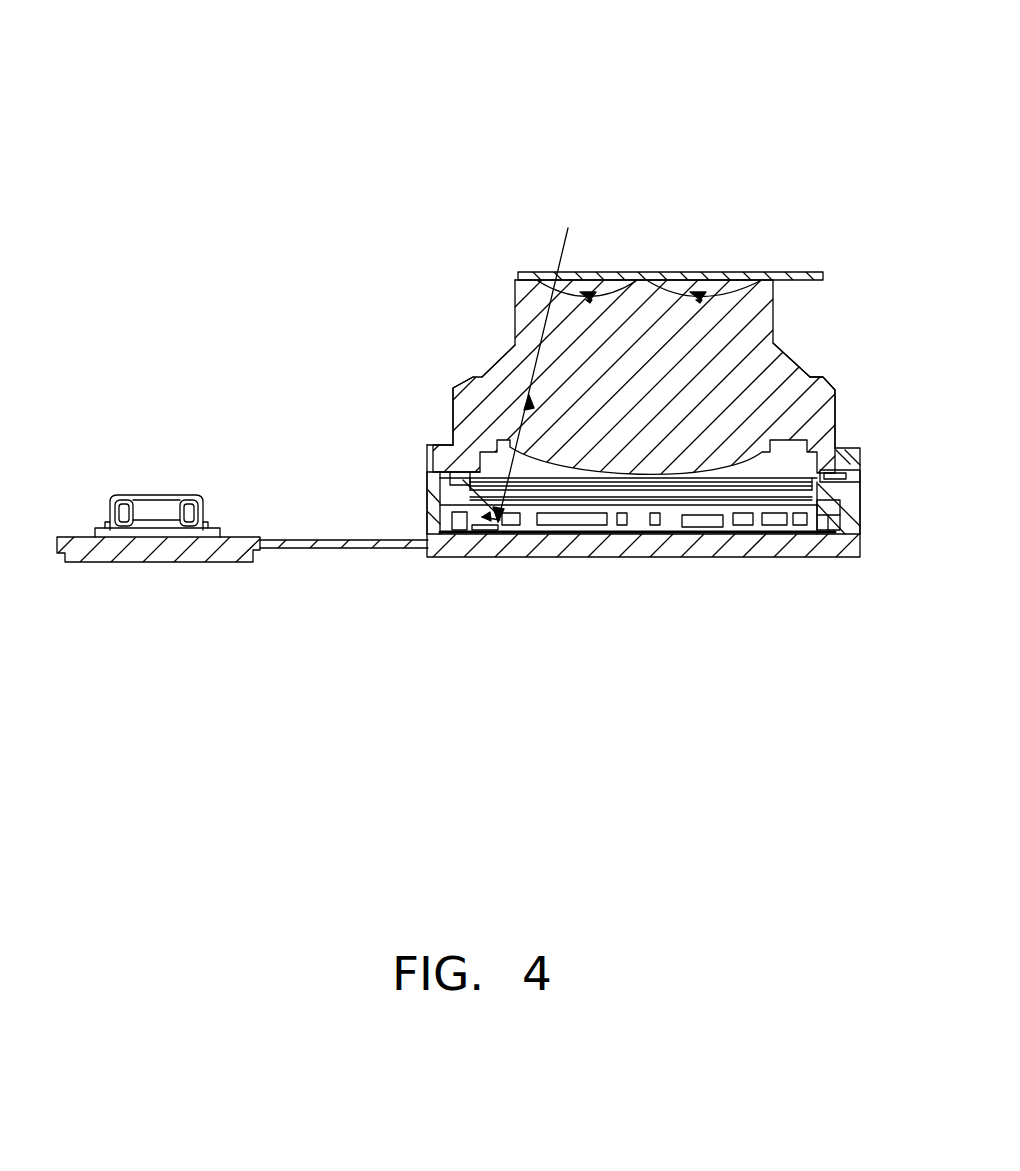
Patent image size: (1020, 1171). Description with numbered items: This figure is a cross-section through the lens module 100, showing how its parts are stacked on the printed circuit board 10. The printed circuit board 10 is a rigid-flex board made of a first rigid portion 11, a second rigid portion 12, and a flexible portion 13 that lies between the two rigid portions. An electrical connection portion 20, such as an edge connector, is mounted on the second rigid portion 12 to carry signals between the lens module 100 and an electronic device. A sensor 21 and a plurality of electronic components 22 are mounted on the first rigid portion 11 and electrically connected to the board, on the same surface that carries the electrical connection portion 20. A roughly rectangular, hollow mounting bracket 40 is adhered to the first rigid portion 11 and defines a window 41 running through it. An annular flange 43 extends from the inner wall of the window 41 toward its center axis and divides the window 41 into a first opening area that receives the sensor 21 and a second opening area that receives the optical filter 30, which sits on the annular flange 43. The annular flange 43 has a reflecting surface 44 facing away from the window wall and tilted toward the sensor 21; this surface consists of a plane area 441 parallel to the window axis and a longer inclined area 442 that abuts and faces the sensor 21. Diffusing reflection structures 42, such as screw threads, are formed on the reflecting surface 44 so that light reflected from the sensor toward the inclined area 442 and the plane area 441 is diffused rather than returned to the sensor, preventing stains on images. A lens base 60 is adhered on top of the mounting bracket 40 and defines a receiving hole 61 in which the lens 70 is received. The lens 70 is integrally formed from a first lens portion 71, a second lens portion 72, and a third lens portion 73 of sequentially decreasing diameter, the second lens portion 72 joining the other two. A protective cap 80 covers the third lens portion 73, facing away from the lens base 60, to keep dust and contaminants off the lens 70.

The lens module 100 is at (476, 46).
The printed circuit board 10 is at (438, 604).
The first rigid portion 11 is at (453, 550).
The second rigid portion 12 is at (232, 550).
The flexible portion 13 is at (430, 615).
The electrical connection portion 20 is at (190, 502).
The sensor 21 is at (487, 545).
The electronic components 22 is at (700, 530).
The optical filter 30 is at (445, 483).
The mounting bracket 40 is at (840, 502).
The window 41 is at (440, 510).
The diffusing reflection structures 42 is at (565, 535).
The annular flange 43 is at (835, 508).
The reflecting surface 44 is at (880, 618).
The plane area 441 is at (777, 498).
The inclined area 442 is at (773, 505).
The lens base 60 is at (445, 451).
The receiving hole 61 is at (770, 465).
The lens 70 is at (888, 298).
The first lens portion 71 is at (822, 381).
The second lens portion 72 is at (793, 353).
The third lens portion 73 is at (770, 282).
The protective cap 80 is at (722, 272).